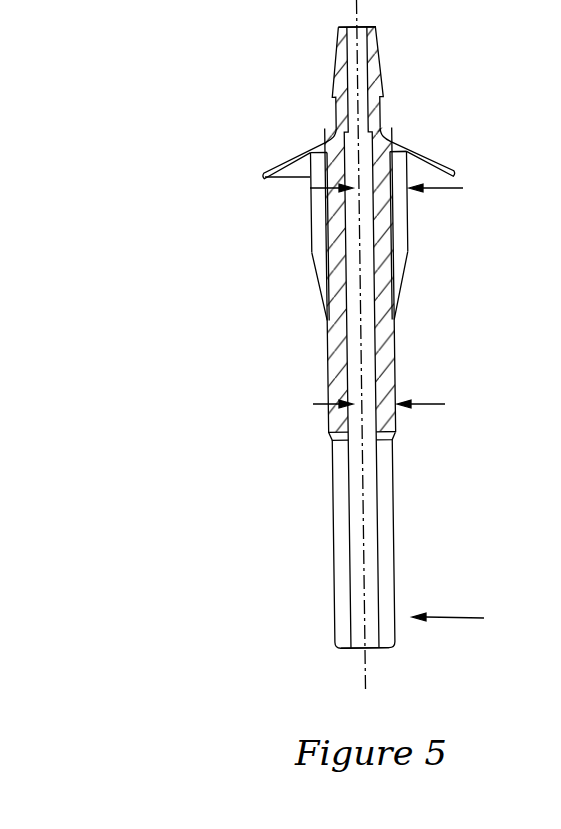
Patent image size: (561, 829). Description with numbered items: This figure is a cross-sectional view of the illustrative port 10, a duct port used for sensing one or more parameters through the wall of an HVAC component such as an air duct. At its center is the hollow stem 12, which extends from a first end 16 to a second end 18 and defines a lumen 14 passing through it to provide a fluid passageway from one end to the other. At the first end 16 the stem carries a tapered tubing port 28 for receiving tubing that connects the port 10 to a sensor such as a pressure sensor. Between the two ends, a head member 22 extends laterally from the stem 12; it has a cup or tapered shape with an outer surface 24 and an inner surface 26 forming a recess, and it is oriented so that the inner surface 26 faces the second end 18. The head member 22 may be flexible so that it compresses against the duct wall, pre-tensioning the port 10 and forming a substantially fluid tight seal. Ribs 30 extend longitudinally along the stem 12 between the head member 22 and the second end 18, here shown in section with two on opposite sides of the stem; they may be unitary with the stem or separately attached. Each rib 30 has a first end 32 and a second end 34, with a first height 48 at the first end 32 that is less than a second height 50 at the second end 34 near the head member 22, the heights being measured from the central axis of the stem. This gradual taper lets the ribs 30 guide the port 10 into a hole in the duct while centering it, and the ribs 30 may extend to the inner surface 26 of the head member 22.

The port 10 is at (115, 43).
The hollow stem 12 is at (331, 478).
The lumen 14 is at (359, 647).
The first end 16 is at (413, 63).
The second end 18 is at (466, 619).
The head member 22 is at (283, 168).
The outer surface 24 is at (432, 156).
The inner surface 26 is at (284, 177).
The tubing port 28 is at (342, 29).
The ribs 30 is at (309, 258).
The first end of rib 32 is at (395, 318).
The second end of rib 34 is at (409, 177).
The first height 48 is at (432, 404).
The second height 50 is at (445, 188).